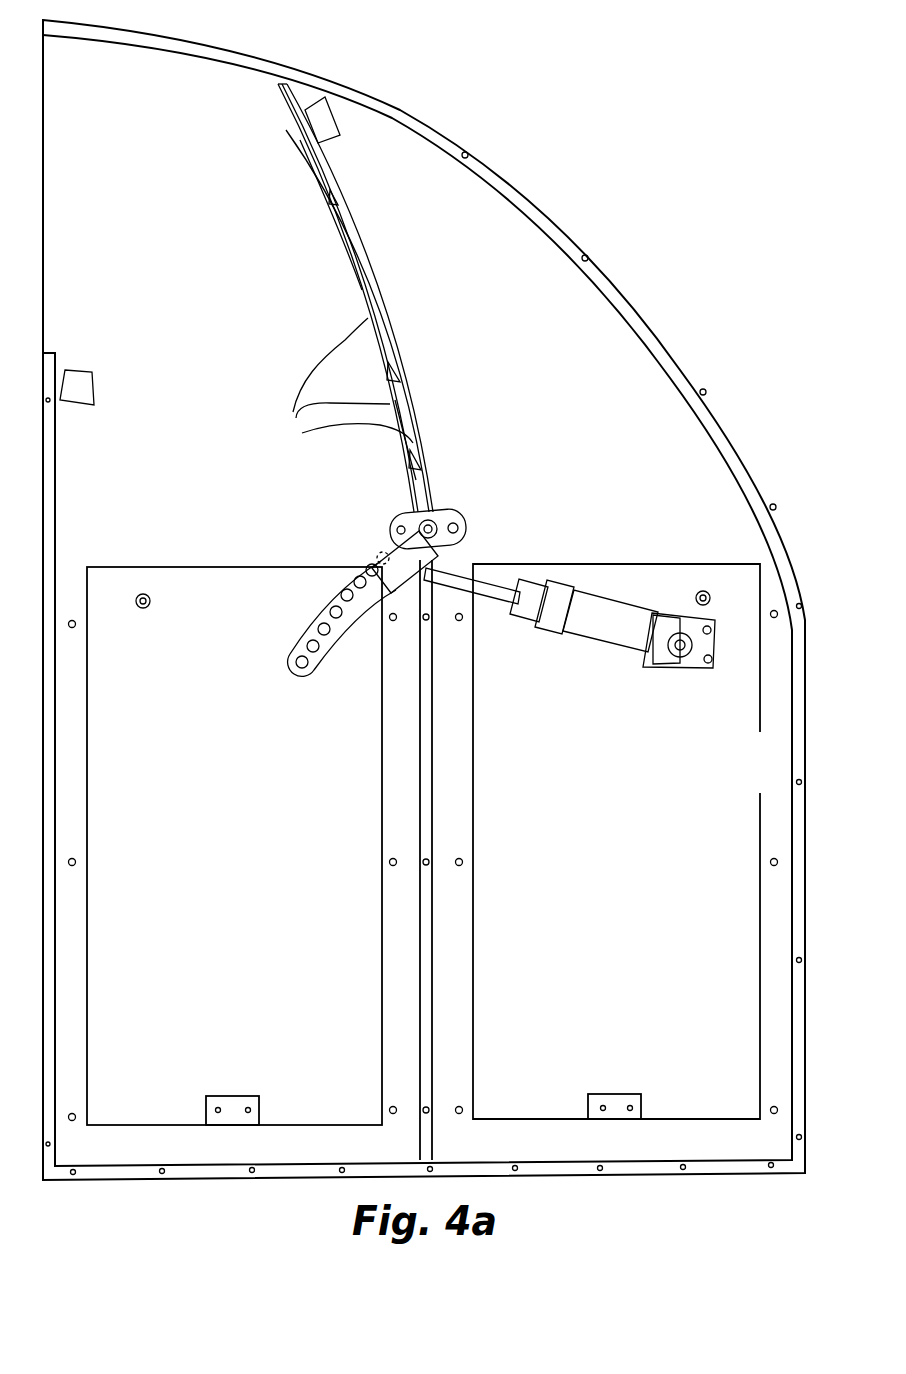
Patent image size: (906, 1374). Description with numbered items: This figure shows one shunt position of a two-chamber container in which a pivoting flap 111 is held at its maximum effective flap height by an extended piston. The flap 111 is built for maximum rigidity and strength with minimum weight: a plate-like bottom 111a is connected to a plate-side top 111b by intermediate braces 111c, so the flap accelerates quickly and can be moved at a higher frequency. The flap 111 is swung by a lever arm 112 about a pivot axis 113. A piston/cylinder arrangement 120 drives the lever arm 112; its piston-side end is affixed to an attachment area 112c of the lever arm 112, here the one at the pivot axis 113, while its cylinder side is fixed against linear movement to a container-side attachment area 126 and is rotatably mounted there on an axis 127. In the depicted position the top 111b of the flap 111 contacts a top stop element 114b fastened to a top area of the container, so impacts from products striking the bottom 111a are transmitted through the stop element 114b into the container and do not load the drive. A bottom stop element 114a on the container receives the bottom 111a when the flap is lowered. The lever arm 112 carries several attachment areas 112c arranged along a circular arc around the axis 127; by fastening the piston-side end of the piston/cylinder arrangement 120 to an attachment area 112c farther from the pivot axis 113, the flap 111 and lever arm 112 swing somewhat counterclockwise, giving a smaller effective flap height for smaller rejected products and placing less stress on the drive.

The flap 111 is at (397, 293).
The bottom of the flap 111a is at (333, 213).
The top of the flap 111b is at (417, 407).
The intermediate braces 111c is at (311, 380).
The lever arm 112 is at (310, 672).
The attachment area 112c is at (345, 598).
The pivot axis 113 is at (440, 513).
The bottom stop element 114a is at (86, 362).
The top stop element 114b is at (348, 117).
The piston/cylinder arrangement 120 is at (530, 637).
The container-side attachment area 126 is at (680, 600).
The axis 127 is at (680, 648).